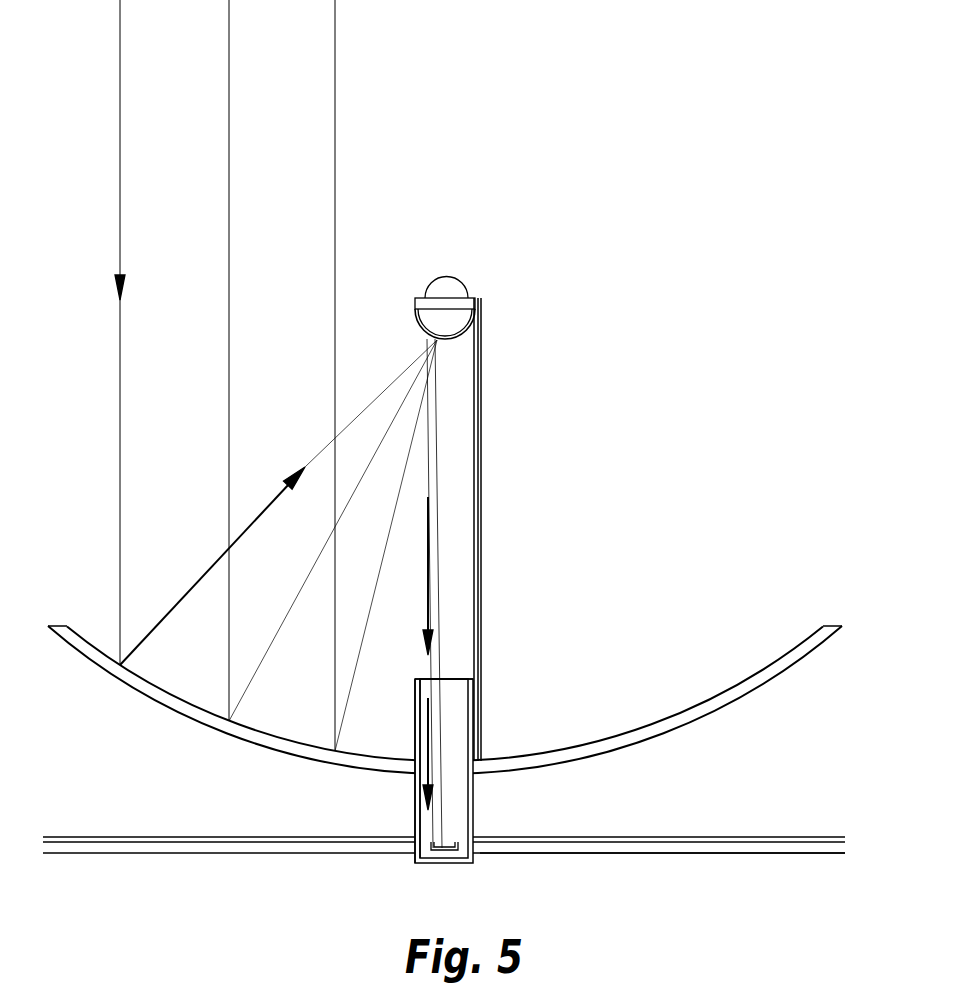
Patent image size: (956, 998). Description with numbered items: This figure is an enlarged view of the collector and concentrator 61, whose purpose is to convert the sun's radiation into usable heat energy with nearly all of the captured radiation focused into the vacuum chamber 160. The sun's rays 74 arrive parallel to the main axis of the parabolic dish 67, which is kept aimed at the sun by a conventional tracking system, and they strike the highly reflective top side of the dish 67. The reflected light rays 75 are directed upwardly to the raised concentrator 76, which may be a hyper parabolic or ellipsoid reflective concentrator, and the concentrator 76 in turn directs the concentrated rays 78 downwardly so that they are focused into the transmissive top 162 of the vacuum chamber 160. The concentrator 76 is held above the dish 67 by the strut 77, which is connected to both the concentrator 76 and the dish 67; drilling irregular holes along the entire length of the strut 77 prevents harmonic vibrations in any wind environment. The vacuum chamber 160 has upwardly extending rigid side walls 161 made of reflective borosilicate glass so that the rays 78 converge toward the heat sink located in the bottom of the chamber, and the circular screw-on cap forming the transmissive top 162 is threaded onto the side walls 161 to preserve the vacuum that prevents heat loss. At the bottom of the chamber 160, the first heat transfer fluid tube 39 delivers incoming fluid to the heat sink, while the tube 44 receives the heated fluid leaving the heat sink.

The first heat transfer fluid tube 39 is at (174, 853).
The tube 44 is at (628, 853).
The collector and concentrator 61 is at (575, 375).
The parabolic dish 67 is at (655, 725).
The sun's rays 74 is at (120, 452).
The reflected light rays 75 is at (312, 458).
The concentrator 76 is at (437, 318).
The strut 77 is at (484, 486).
The concentrated rays 78 is at (428, 550).
The vacuum chamber 160 is at (458, 736).
The side walls 161 is at (415, 720).
The transmissive top 162 is at (453, 678).